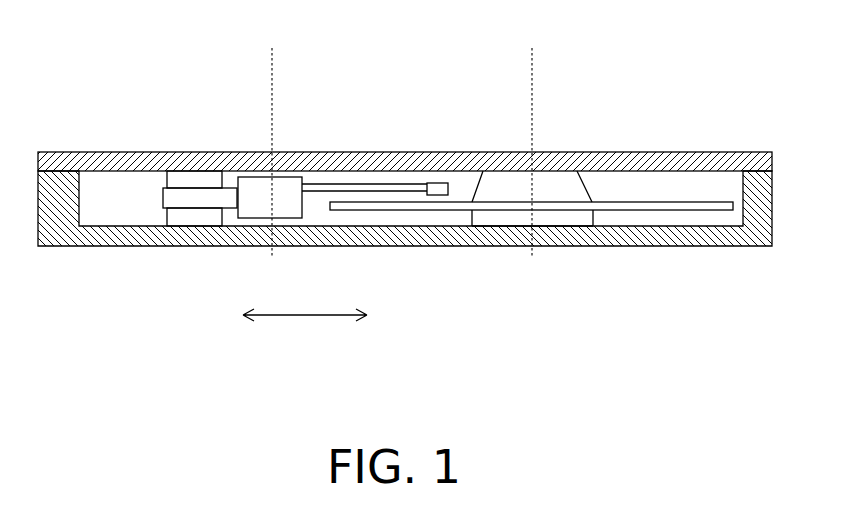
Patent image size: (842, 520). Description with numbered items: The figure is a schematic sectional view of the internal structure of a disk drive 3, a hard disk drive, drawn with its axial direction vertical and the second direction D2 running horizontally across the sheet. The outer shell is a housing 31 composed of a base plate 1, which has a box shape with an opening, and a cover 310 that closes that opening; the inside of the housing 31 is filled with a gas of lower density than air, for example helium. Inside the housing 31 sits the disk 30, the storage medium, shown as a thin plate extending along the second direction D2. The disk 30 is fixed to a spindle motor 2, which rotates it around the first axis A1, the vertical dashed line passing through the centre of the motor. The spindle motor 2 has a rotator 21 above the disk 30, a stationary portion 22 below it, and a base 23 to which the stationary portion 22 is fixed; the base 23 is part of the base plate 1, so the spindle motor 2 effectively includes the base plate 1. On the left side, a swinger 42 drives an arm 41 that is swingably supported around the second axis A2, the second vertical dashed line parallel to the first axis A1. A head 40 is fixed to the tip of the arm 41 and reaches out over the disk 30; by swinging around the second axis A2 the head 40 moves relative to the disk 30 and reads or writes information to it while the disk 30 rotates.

The base plate 1 is at (88, 233).
The cover 310 is at (148, 162).
The housing 31 is at (405, 258).
The disk drive 3 is at (411, 216).
The swinger 42 is at (198, 182).
The arm 41 is at (371, 187).
The head 40 is at (438, 190).
The disk 30 is at (663, 205).
The rotator 21 is at (572, 188).
The stationary portion 22 is at (487, 215).
The base 23 is at (525, 237).
The spindle motor 2 is at (527, 283).
The first axis A1 is at (532, 140).
The second axis A2 is at (272, 140).
The second direction D2 is at (305, 305).